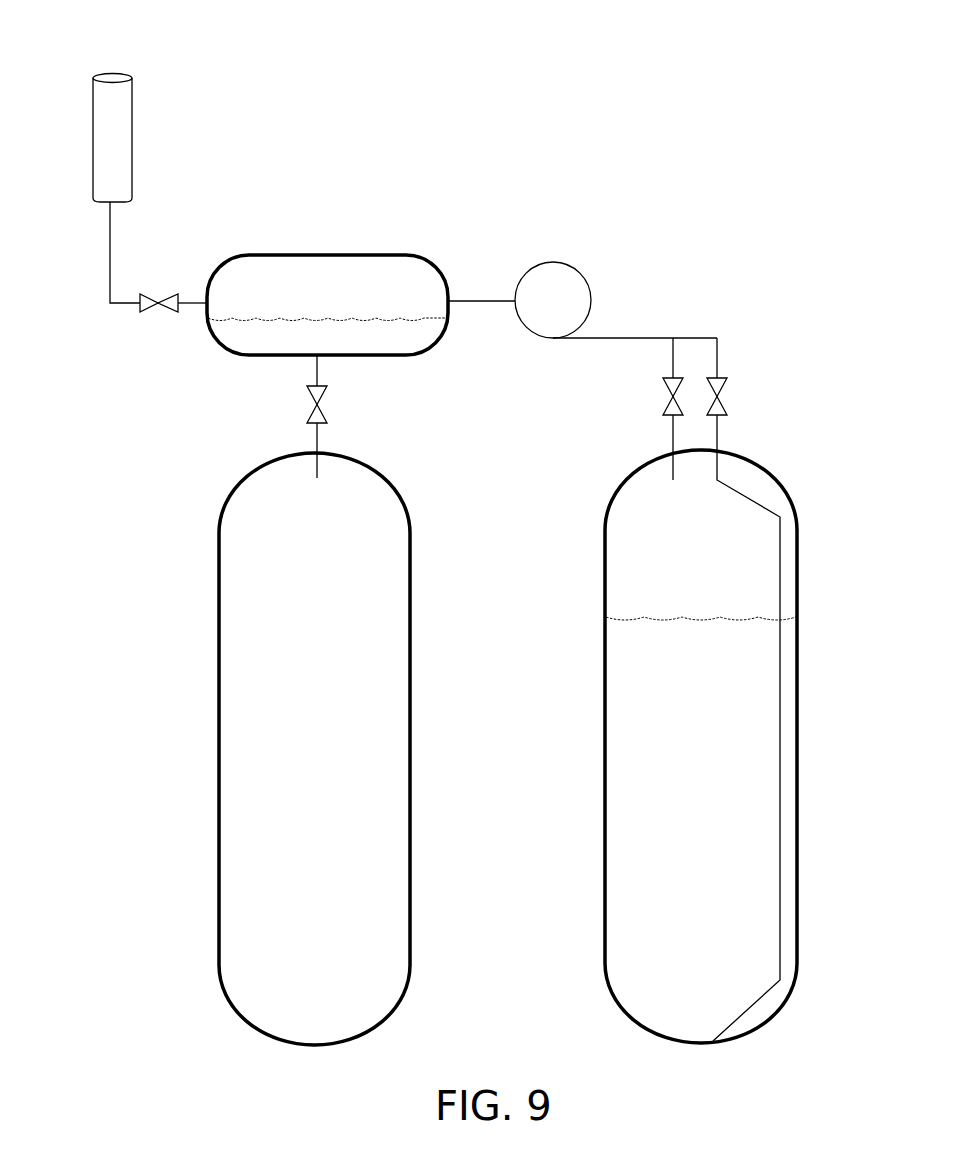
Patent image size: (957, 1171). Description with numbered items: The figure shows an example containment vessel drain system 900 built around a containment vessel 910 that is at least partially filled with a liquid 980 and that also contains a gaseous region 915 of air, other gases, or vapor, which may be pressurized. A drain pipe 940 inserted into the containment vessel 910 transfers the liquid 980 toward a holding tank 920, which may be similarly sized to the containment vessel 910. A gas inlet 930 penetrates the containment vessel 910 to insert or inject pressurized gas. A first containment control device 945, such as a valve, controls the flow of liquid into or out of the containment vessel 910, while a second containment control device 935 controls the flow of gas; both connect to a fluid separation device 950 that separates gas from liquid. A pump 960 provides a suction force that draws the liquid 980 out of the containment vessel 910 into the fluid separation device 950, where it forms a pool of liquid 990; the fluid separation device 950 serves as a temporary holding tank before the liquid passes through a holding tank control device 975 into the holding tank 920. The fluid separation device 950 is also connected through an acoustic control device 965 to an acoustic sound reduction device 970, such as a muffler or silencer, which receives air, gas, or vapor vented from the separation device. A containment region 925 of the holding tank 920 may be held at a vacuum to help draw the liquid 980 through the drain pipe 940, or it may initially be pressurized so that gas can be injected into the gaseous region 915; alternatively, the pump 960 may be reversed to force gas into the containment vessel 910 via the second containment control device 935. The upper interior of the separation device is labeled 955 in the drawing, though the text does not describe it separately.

The containment vessel drain system 900 is at (740, 73).
The containment vessel 910 is at (620, 483).
The gaseous region 915 is at (695, 561).
The holding tank 920 is at (235, 490).
The containment region 925 is at (312, 713).
The gas inlet 930 is at (673, 480).
The second containment control device 935 is at (663, 402).
The drain pipe 940 is at (780, 735).
The first containment control device 945 is at (727, 396).
The fluid separation device 950 is at (314, 255).
The vessel headspace 955 is at (316, 286).
The pump 960 is at (554, 263).
The acoustic control device 965 is at (170, 308).
The acoustic sound reduction device 970 is at (97, 146).
The holding tank control device 975 is at (311, 412).
The liquid 980 is at (701, 717).
The pool of liquid 990 is at (327, 332).